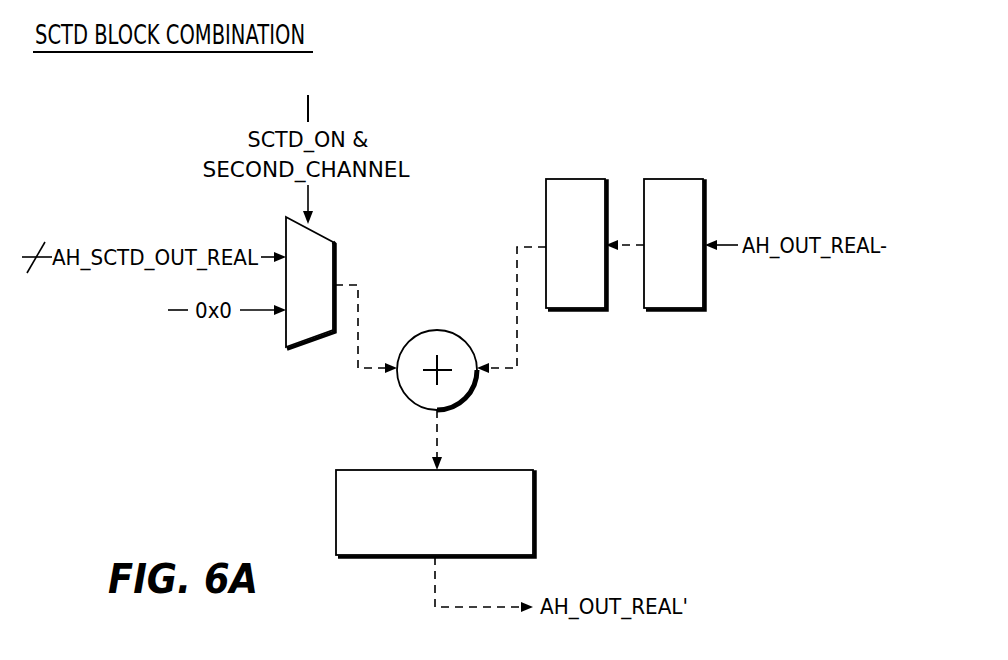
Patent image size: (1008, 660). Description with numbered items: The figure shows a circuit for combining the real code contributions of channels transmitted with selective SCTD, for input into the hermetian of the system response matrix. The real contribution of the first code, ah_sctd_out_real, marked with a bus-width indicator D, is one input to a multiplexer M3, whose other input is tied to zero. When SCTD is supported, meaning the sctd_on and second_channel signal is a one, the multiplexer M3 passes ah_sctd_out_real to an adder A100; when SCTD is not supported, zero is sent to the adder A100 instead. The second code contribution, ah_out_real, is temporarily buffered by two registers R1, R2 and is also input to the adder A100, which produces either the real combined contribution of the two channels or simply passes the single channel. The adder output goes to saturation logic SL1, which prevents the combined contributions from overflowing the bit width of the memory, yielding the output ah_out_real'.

The multiplexer M3 is at (328, 283).
The adder A100 is at (437, 355).
The register R1 is at (576, 230).
The register R2 is at (674, 230).
The saturation logic SL1 is at (458, 513).
The bus width marker D is at (36, 276).